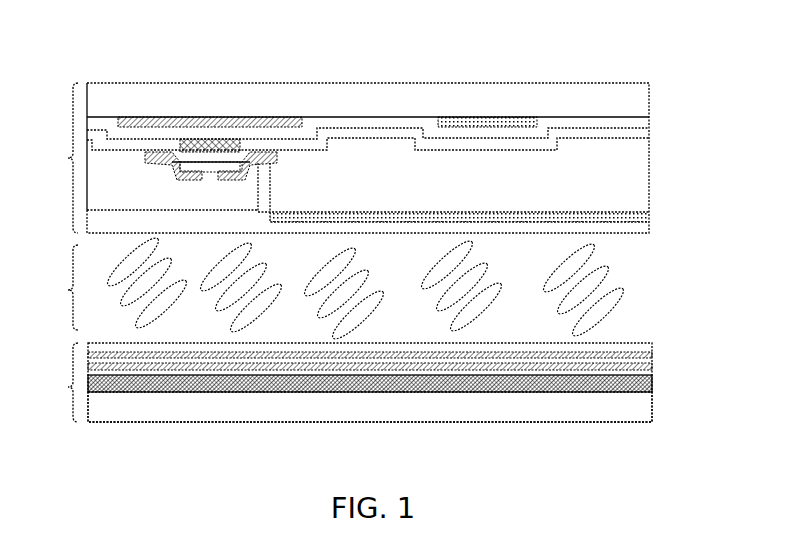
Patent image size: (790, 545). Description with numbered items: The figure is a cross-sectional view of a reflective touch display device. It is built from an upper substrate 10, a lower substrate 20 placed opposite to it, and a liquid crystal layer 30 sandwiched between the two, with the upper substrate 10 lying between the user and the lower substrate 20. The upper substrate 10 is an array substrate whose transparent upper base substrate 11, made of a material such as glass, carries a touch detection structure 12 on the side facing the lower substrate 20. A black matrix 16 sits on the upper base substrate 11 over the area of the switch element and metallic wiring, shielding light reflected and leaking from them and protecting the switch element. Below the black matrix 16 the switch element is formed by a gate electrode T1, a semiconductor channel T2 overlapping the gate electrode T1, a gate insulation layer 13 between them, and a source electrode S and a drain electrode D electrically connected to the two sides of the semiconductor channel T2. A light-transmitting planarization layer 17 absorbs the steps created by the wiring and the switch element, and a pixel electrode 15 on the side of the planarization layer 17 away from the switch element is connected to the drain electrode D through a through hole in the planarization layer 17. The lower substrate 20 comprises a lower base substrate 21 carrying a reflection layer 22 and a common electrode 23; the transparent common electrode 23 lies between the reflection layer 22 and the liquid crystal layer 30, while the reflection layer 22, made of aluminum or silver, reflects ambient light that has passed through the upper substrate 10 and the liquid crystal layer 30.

The upper substrate 10 is at (70, 158).
The upper base substrate 11 is at (620, 97).
The touch detection structure 12 is at (479, 122).
The gate insulation layer 13 is at (363, 137).
The pixel electrode 15 is at (533, 215).
The black matrix 16 is at (133, 118).
The planarization layer 17 is at (620, 177).
The gate electrode T1 is at (195, 145).
The semiconductor channel T2 is at (214, 167).
The source electrode S is at (165, 157).
The drain electrode D is at (265, 153).
The liquid crystal layer 30 is at (70, 290).
The lower substrate 20 is at (70, 387).
The lower base substrate 21 is at (610, 418).
The reflection layer 22 is at (613, 375).
The common electrode 23 is at (600, 365).